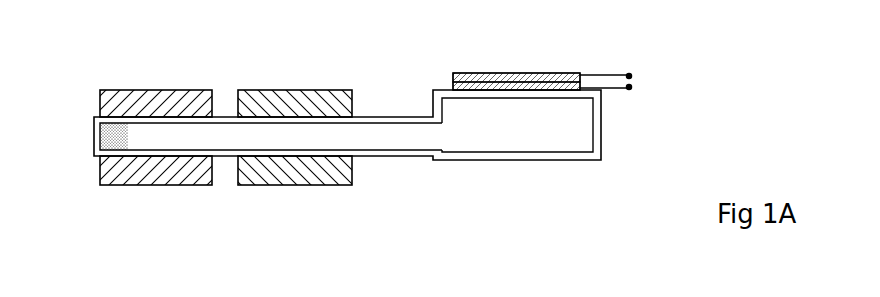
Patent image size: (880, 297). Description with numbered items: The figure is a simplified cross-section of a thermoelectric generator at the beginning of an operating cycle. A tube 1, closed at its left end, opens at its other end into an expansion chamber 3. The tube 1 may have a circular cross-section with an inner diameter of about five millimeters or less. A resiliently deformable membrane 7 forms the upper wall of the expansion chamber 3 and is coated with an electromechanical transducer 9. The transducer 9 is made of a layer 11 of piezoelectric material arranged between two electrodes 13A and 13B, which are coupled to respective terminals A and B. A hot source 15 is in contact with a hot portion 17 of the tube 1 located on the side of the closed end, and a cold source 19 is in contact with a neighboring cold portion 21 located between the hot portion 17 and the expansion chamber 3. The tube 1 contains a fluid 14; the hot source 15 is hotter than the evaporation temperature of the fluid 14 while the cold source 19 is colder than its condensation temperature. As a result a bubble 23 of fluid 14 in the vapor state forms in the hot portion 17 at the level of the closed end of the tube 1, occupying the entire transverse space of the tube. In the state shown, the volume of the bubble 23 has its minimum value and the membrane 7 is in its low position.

The tube 1 is at (375, 116).
The expansion chamber 3 is at (608, 150).
The resiliently deformable membrane 7 is at (522, 98).
The electromechanical transducer 9 is at (500, 52).
The layer of piezoelectric material 11 is at (482, 75).
The electrode 13A is at (522, 78).
The electrode 13B is at (535, 88).
The fluid 14 is at (384, 143).
The hot source 15 is at (151, 92).
The hot portion 17 is at (187, 120).
The cold source 19 is at (260, 100).
The cold portion 21 is at (302, 120).
The bubble 23 is at (112, 130).
The terminal A is at (629, 76).
The terminal B is at (631, 87).